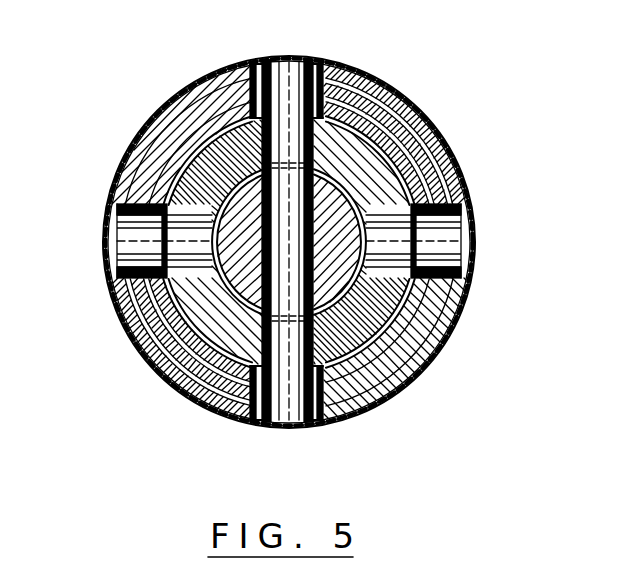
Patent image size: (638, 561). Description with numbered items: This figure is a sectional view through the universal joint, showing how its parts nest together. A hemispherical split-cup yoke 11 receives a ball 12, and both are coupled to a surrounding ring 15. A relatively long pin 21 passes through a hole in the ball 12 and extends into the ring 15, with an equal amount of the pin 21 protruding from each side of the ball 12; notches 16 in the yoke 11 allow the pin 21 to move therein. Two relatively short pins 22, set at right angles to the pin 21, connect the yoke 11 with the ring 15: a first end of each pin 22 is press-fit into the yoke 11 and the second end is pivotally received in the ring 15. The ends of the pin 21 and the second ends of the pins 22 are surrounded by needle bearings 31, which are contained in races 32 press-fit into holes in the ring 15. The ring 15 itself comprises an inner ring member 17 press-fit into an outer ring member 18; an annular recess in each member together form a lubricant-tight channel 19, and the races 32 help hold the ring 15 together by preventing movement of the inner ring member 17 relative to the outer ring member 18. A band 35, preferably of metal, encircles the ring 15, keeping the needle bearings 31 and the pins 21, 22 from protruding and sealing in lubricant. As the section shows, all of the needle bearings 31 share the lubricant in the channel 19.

The hemispherical split-cup yoke 11 is at (392, 100).
The ball 12 is at (395, 142).
The ring 15 is at (355, 192).
The notches 16 is at (241, 128).
The inner ring member 17 is at (420, 330).
The outer ring member 18 is at (463, 308).
The channel 19 is at (178, 102).
The pin 21 is at (316, 58).
The pins 22 is at (112, 243).
The needle bearings 31 is at (122, 216).
The races 32 is at (130, 205).
The band 35 is at (150, 345).